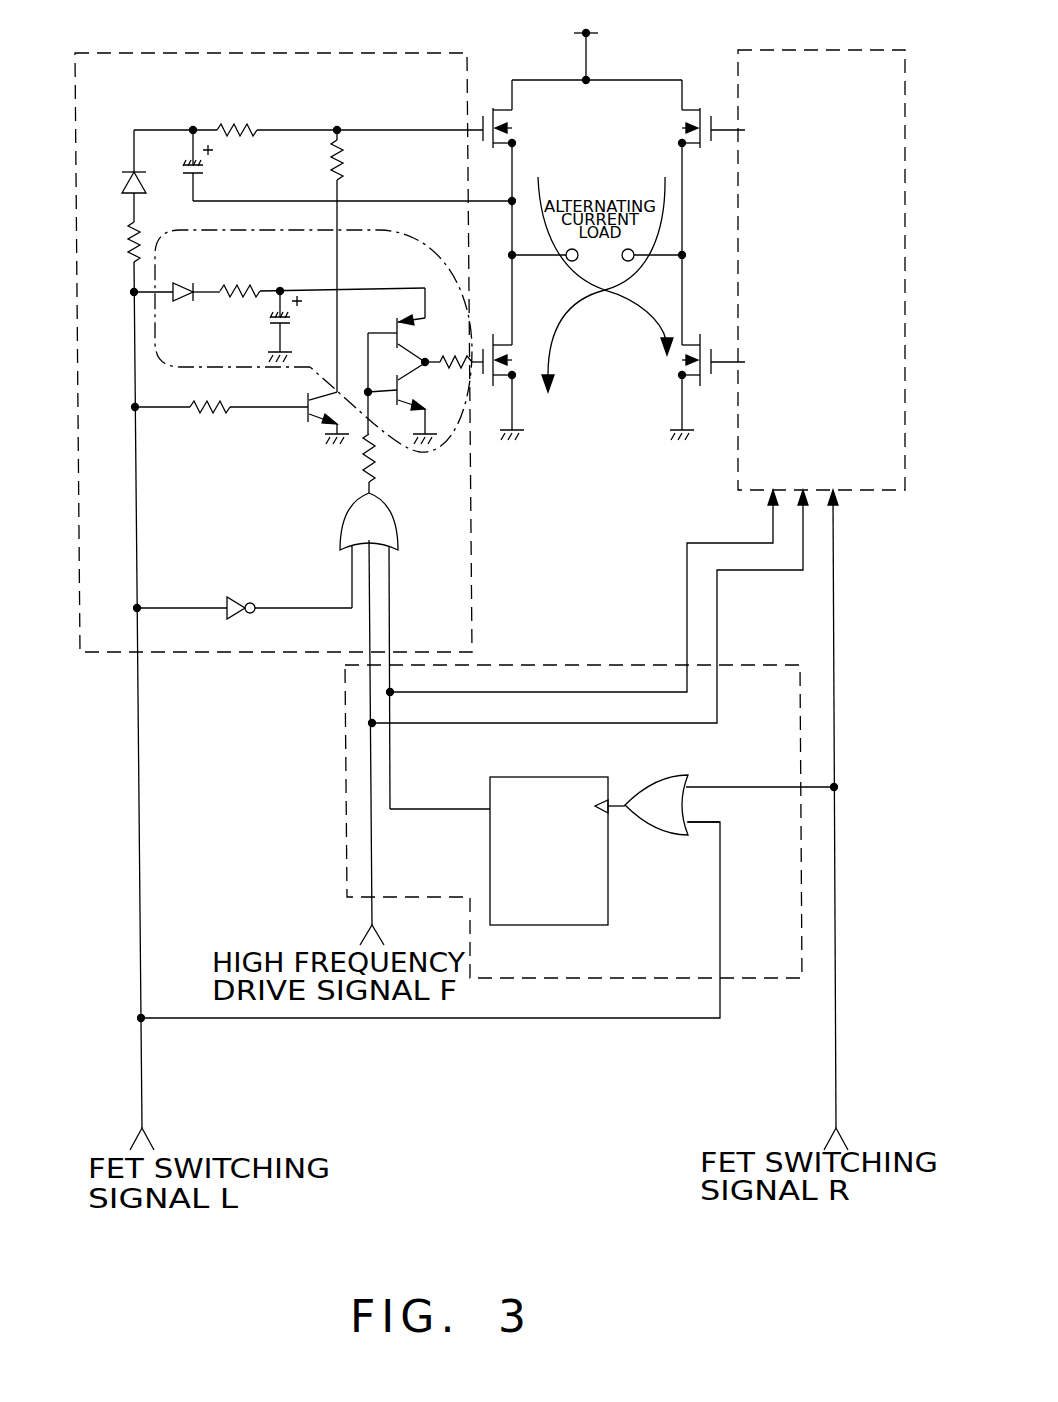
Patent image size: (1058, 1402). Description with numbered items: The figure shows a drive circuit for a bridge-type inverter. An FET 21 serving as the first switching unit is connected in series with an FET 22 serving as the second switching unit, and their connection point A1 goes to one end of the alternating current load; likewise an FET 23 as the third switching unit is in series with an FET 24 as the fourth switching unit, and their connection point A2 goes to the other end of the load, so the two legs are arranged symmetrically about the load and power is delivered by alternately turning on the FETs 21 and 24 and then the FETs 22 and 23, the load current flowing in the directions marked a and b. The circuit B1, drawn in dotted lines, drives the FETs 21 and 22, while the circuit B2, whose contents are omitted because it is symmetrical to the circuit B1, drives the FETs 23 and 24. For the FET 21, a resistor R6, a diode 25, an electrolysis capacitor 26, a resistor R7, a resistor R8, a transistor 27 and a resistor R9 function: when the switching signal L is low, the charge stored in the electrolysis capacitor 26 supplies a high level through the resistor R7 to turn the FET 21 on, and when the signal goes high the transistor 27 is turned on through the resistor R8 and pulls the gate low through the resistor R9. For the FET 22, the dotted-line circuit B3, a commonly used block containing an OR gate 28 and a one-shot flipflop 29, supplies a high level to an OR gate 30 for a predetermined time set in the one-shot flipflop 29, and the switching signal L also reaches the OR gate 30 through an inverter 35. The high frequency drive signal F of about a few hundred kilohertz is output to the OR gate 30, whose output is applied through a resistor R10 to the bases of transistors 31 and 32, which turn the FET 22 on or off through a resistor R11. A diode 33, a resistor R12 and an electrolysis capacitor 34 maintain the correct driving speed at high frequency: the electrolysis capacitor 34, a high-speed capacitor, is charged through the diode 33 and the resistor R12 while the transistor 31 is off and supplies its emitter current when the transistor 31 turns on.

The FET 21 is at (522, 123).
The FET 22 is at (523, 348).
The FET 23 is at (728, 120).
The FET 24 is at (730, 347).
The diode 25 is at (122, 183).
The electrolysis capacitor 26 is at (212, 170).
The transistor 27 is at (318, 430).
The OR gate 28 is at (663, 828).
The one-shot flipflop 29 is at (573, 925).
The OR gate 30 is at (400, 526).
The transistor 31 is at (394, 313).
The transistor 32 is at (408, 373).
The diode 33 is at (189, 282).
The electrolysis capacitor 34 is at (265, 322).
The inverter 35 is at (246, 598).
The resistor R6 is at (125, 252).
The resistor R7 is at (243, 122).
The resistor R8 is at (205, 416).
The resistor R9 is at (342, 165).
The resistor R10 is at (378, 458).
The resistor R11 is at (455, 358).
The resistor R12 is at (250, 282).
The circuit B1 is at (368, 58).
The circuit B2 is at (928, 30).
The circuit B3 is at (355, 780).
The high frequency drive signal F is at (191, 366).
The current direction in load a is at (543, 195).
The current direction in load b is at (550, 353).
The connection point A1 is at (544, 246).
The connection point A2 is at (670, 246).